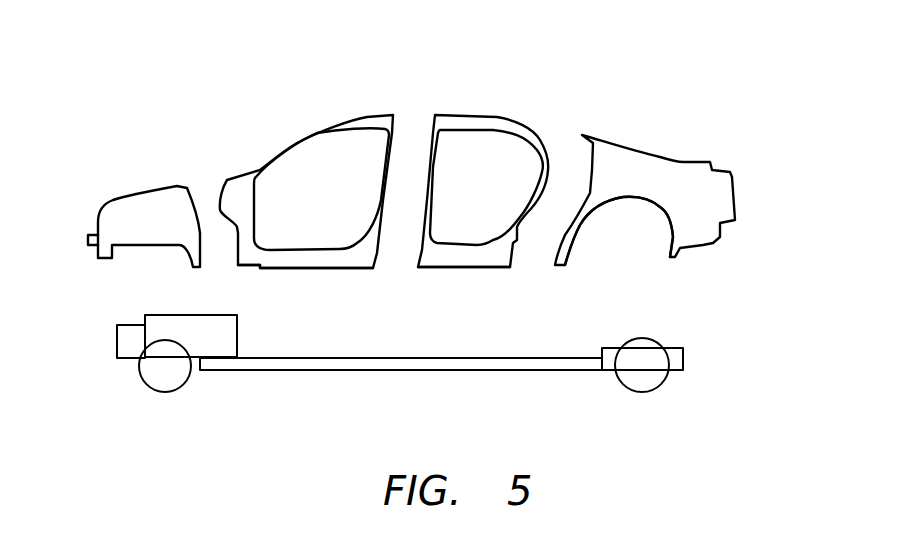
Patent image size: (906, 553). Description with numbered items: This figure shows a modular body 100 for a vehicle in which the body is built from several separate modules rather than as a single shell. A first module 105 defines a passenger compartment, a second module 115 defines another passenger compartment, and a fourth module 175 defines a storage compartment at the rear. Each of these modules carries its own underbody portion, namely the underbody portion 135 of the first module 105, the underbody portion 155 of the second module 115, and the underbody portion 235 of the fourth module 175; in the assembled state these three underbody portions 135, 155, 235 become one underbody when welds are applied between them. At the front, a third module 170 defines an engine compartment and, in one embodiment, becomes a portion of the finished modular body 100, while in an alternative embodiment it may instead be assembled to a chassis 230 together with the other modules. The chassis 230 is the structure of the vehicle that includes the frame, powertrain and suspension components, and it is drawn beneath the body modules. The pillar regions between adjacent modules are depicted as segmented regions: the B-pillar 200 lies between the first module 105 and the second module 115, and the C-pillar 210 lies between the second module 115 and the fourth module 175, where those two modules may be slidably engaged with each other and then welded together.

The modular body 100 is at (222, 88).
The first module 105 is at (357, 116).
The second module 115 is at (470, 114).
The underbody portion 135 is at (327, 268).
The underbody portion 155 is at (435, 267).
The third module 170 is at (133, 199).
The fourth module 175 is at (660, 153).
The B-pillar 200 is at (415, 116).
The C-pillar 210 is at (555, 131).
The chassis 230 is at (527, 357).
The underbody portion 235 is at (627, 197).